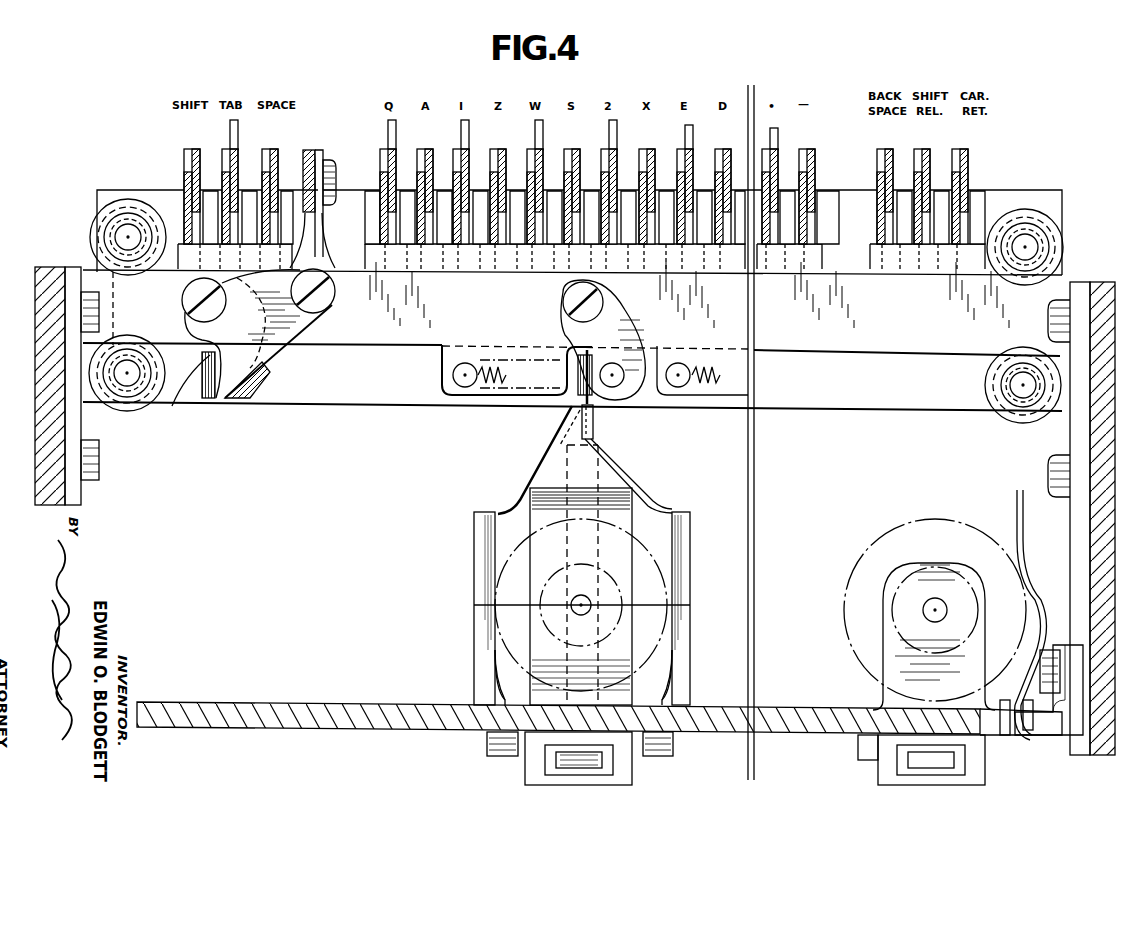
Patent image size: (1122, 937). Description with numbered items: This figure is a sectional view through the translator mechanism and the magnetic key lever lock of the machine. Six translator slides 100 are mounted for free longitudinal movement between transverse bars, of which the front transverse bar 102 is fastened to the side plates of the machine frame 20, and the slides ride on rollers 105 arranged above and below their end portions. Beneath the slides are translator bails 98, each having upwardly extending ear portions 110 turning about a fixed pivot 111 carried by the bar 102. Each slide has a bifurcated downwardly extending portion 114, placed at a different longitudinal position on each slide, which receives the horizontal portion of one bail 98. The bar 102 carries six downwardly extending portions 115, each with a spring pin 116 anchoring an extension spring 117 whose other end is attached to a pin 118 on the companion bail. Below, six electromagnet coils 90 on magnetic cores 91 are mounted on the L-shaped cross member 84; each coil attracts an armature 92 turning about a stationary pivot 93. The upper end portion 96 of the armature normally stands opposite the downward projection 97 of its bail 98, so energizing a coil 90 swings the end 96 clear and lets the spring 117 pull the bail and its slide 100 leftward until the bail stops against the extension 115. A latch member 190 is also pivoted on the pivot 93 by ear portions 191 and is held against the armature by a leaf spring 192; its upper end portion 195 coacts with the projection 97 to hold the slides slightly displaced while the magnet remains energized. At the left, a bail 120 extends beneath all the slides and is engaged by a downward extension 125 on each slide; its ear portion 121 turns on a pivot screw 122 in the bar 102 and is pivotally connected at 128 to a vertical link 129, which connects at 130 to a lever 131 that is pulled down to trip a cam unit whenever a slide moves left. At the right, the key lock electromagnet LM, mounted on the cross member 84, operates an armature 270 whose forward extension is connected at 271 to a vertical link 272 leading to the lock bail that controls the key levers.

The machine frame 20 is at (1088, 435).
The L-shaped cross member 84 is at (350, 705).
The electromagnet coil 90 is at (518, 575).
The magnetic core 91 is at (540, 620).
The armature 92 is at (645, 508).
The stationary pivot 93 is at (487, 740).
The upper end portion of armature 96 is at (556, 440).
The downward projection of bail 97 is at (628, 476).
The translator bail 98 is at (600, 410).
The translator slide 100 is at (97, 268).
The front transverse bar 102 is at (913, 323).
The roller 105 is at (1062, 262).
The ear portion of bail 110 is at (615, 320).
The fixed pivot 111 is at (566, 300).
The bifurcated downwardly extending portion 114 is at (572, 392).
The downwardly extending portion of cross bar 115 is at (475, 390).
The spring pin 116 is at (452, 375).
The extension spring 117 is at (486, 368).
The pin 118 is at (620, 368).
The bail 120 is at (179, 393).
The ear portion of bail 121 is at (293, 321).
The pivot screw 122 is at (195, 298).
The downward extension of slide 125 is at (258, 384).
The pivotal connection 128 is at (335, 289).
The vertical link 129 is at (318, 217).
The pivotal connection 130 is at (329, 160).
The lever 131 is at (309, 150).
The latch member 190 is at (512, 516).
The ear portion of latch member 191 is at (478, 678).
The leaf spring 192 is at (559, 576).
The upper end portion of latch member 195 is at (596, 426).
The armature 270 is at (884, 700).
The connection 271 is at (1030, 742).
The vertical link 272 is at (1022, 512).
The electromagnet LM is at (930, 525).